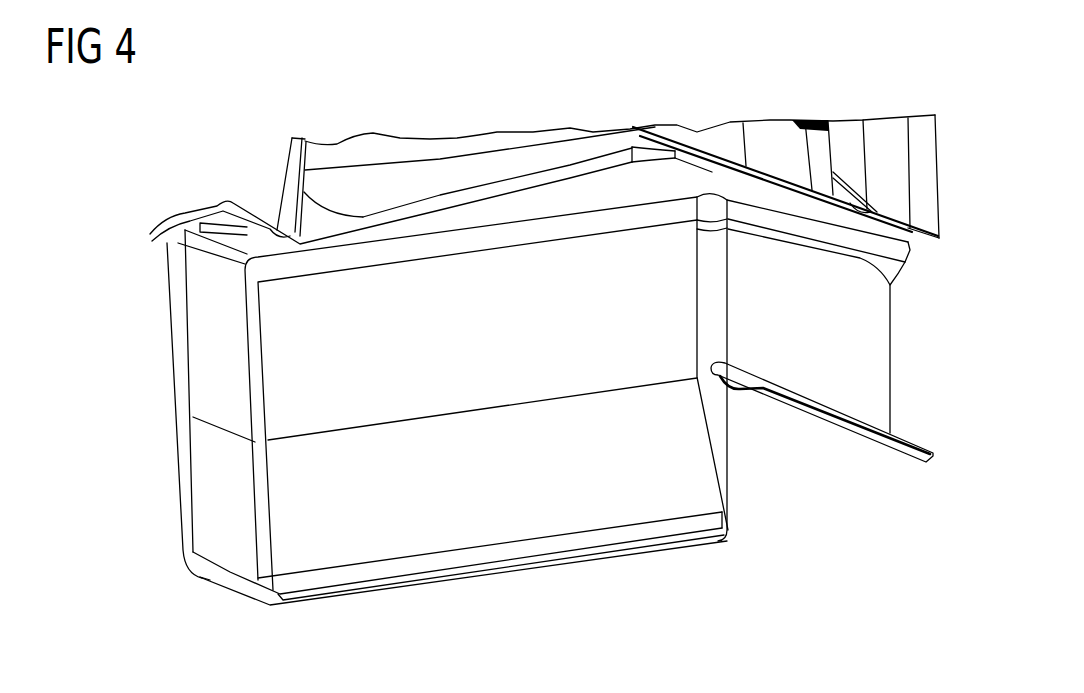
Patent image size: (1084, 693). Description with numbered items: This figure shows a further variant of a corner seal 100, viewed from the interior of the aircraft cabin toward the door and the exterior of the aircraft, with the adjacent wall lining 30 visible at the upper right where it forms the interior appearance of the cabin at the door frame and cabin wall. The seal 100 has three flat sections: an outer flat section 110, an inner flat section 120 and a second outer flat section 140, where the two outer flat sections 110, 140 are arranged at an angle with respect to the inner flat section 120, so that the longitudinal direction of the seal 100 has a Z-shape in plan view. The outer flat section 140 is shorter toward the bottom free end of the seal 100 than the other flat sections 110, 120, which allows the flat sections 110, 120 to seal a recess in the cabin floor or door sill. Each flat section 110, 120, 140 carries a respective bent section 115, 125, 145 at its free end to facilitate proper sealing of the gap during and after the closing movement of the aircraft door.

The wall lining 30 is at (890, 157).
The corner seal 100 is at (502, 409).
The outer flat section 110 is at (207, 358).
The bent section 115 is at (200, 577).
The inner flat section 120 is at (686, 444).
The bent section 125 is at (720, 520).
The outer flat section 140 is at (865, 343).
The bent section 145 is at (908, 458).